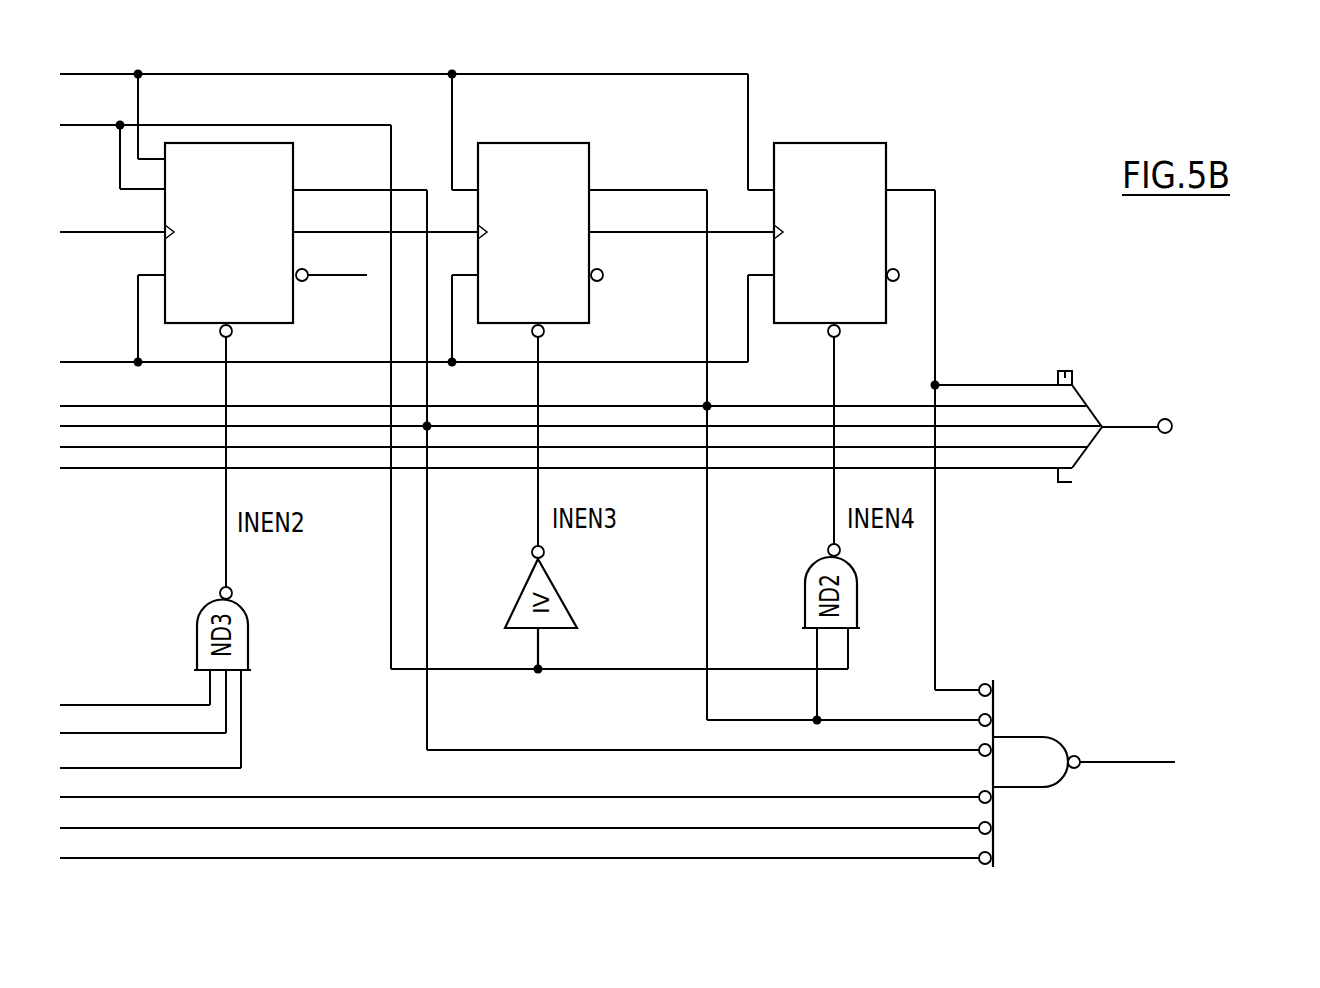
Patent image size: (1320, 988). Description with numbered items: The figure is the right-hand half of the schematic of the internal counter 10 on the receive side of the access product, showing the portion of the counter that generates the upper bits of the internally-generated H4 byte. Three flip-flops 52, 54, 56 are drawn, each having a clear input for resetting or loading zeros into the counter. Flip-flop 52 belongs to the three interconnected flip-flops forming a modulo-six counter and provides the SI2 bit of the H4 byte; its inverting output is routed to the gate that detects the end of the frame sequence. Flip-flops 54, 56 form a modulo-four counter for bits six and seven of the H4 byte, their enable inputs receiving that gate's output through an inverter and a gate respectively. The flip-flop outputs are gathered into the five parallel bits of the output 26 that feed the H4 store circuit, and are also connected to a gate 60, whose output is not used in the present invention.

The internal counter 10 is at (255, 47).
The flip-flop 52 is at (270, 323).
The flip-flop 54 is at (566, 323).
The flip-flop 56 is at (858, 323).
The output 26 is at (1166, 433).
The gate 60 is at (1033, 789).